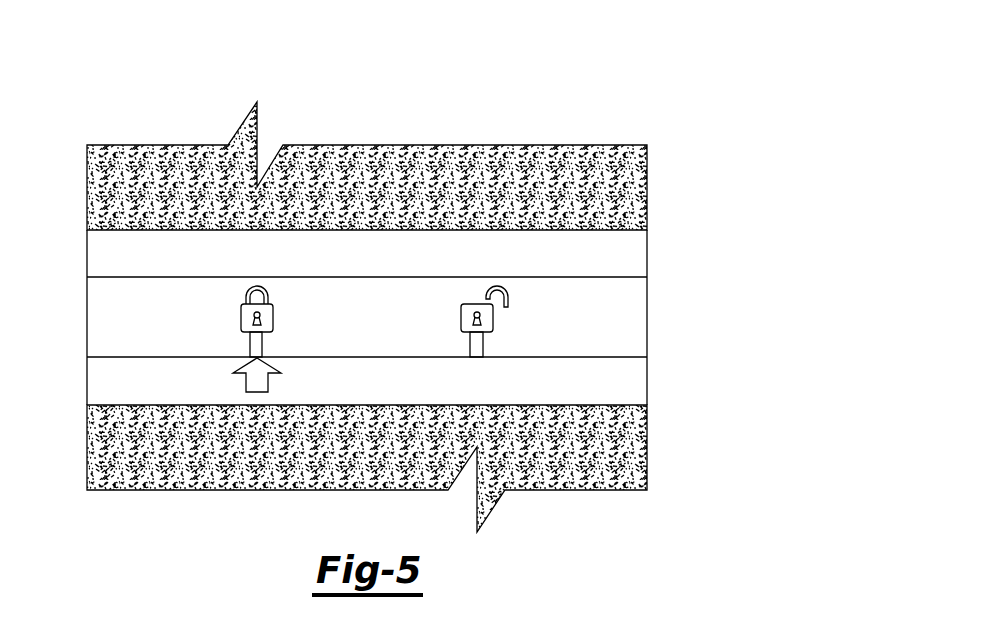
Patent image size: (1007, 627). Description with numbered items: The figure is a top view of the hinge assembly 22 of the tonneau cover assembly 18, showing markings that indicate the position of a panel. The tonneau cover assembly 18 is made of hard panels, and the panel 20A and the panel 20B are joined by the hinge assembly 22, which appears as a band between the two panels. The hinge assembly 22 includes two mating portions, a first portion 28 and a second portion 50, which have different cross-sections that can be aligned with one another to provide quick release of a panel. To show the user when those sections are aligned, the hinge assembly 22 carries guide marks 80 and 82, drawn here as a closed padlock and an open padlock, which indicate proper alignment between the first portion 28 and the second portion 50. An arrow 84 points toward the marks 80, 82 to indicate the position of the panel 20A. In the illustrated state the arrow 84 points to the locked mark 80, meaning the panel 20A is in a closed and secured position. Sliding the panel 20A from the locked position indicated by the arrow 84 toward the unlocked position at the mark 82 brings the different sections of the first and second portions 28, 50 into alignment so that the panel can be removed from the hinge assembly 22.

The tonneau cover assembly 18 is at (374, 290).
The panel 20A is at (118, 446).
The panel 20B is at (615, 187).
The first portion 28 is at (112, 253).
The hinge assembly 22 is at (630, 315).
The second portion 50 is at (612, 378).
The guide mark 80 is at (240, 315).
The guide mark 82 is at (460, 313).
The arrow 84 is at (244, 391).